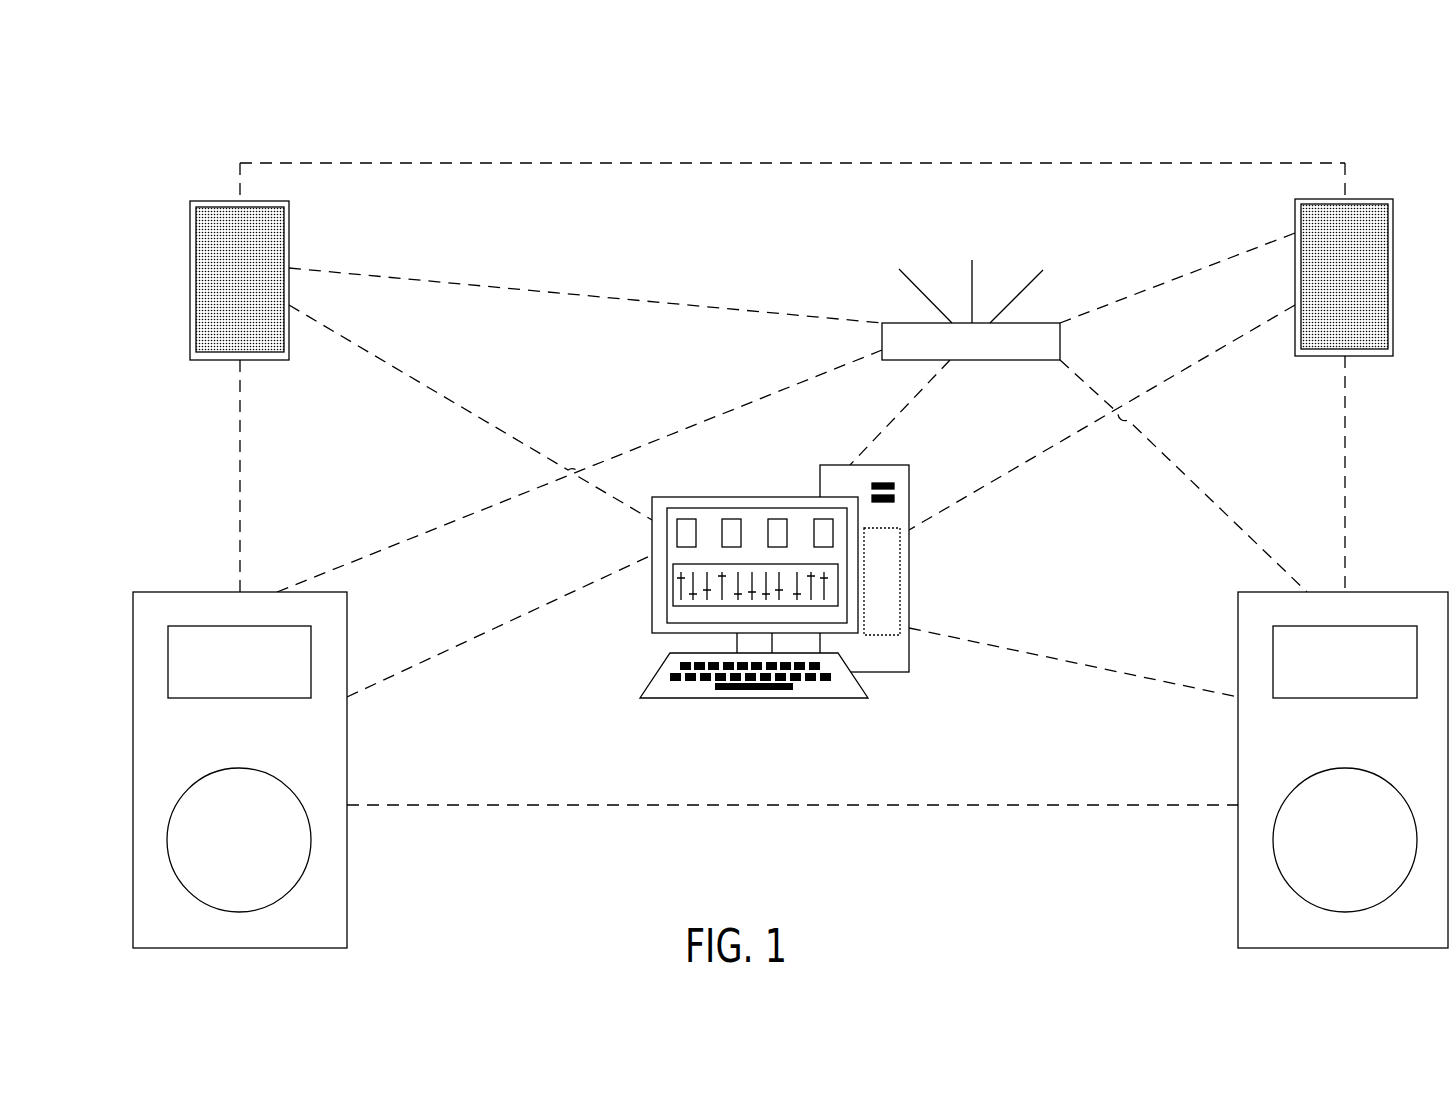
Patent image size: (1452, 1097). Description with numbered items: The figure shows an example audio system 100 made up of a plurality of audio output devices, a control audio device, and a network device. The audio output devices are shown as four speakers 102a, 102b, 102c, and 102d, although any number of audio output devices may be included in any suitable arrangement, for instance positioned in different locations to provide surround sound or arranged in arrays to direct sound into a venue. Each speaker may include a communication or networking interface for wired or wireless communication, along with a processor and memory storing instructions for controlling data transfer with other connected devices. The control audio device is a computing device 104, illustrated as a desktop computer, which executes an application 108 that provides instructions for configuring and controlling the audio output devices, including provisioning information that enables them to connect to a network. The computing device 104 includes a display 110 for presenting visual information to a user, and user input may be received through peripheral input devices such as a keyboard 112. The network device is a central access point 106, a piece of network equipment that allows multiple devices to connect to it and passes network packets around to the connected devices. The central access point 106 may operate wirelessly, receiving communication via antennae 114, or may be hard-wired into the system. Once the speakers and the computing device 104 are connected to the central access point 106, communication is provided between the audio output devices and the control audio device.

The audio system 100 is at (168, 89).
The speaker 102a is at (166, 591).
The speaker 102b is at (202, 196).
The speaker 102c is at (1306, 197).
The speaker 102d is at (1273, 591).
The computing device 104 is at (772, 571).
The central access point 106 is at (940, 292).
The application 108 is at (902, 551).
The display 110 is at (730, 508).
The keyboard 112 is at (666, 670).
The antennae 114 is at (1026, 276).